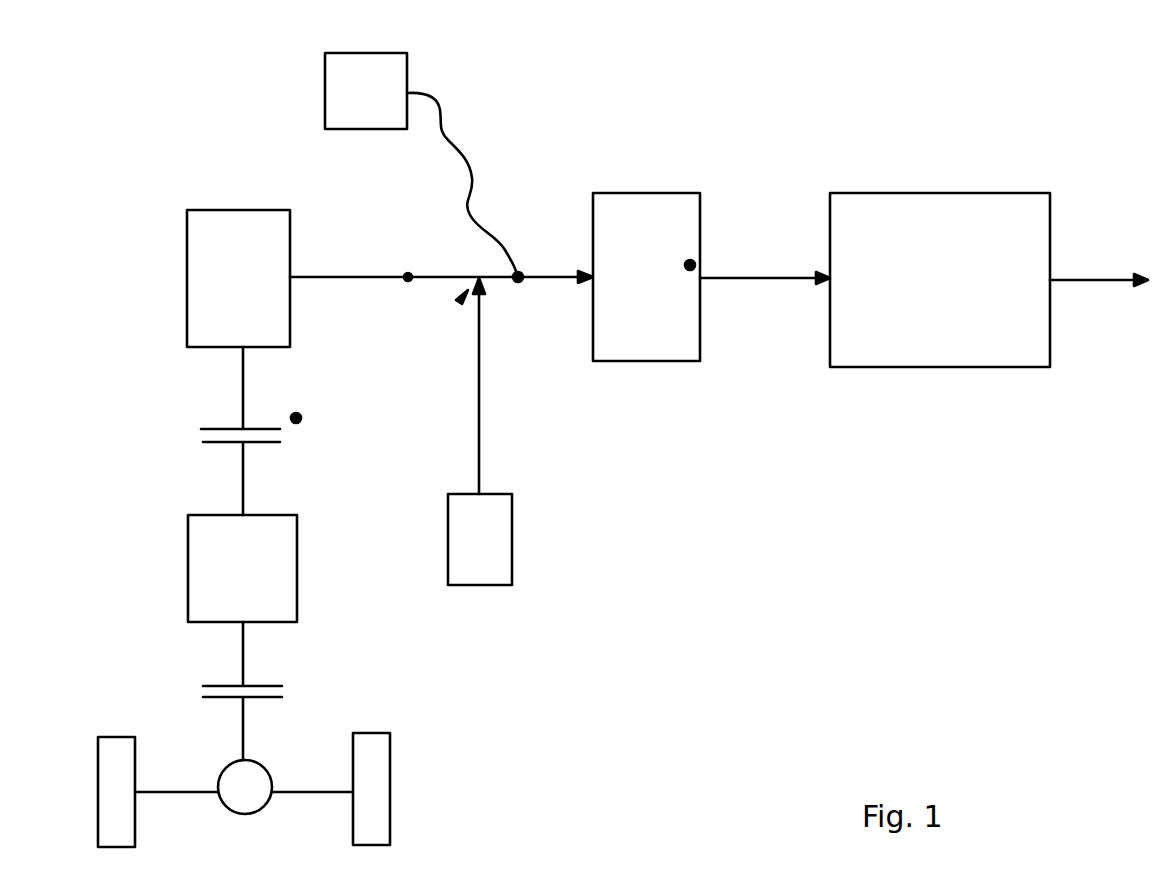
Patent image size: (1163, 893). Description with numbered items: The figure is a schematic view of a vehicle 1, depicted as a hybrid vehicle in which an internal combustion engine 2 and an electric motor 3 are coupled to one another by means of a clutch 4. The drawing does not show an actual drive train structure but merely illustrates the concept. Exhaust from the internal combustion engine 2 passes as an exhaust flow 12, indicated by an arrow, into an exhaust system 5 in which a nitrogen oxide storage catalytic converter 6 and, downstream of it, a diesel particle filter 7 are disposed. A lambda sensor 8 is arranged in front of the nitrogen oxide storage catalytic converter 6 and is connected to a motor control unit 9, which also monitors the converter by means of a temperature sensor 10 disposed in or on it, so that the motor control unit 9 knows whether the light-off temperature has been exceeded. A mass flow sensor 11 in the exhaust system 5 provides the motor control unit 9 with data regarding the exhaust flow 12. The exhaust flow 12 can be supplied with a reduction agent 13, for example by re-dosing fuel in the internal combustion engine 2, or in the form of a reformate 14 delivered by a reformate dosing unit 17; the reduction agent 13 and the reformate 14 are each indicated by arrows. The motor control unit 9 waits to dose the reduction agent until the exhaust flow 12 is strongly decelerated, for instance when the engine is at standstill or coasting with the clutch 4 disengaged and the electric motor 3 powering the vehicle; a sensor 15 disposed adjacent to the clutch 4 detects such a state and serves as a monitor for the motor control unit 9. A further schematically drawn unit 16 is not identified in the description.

The vehicle 1 is at (510, 730).
The internal combustion engine 2 is at (187, 250).
The electric motor 3 is at (188, 555).
The clutch 4 is at (166, 432).
The exhaust system 5 is at (542, 172).
The nitrogen oxide storage catalytic converter 6 is at (660, 361).
The diesel particle filter 7 is at (920, 367).
The lambda sensor 8 is at (518, 282).
The motor control unit 9 is at (407, 62).
The temperature sensor 10 is at (690, 265).
The mass flow sensor 11 is at (460, 300).
The exhaust flow 12 is at (356, 266).
The reduction agent 13 is at (560, 265).
The reformate 14 is at (492, 393).
The sensor 15 is at (296, 418).
The secondary air pump 16 is at (512, 530).
The reformate dosing unit 17 is at (408, 281).